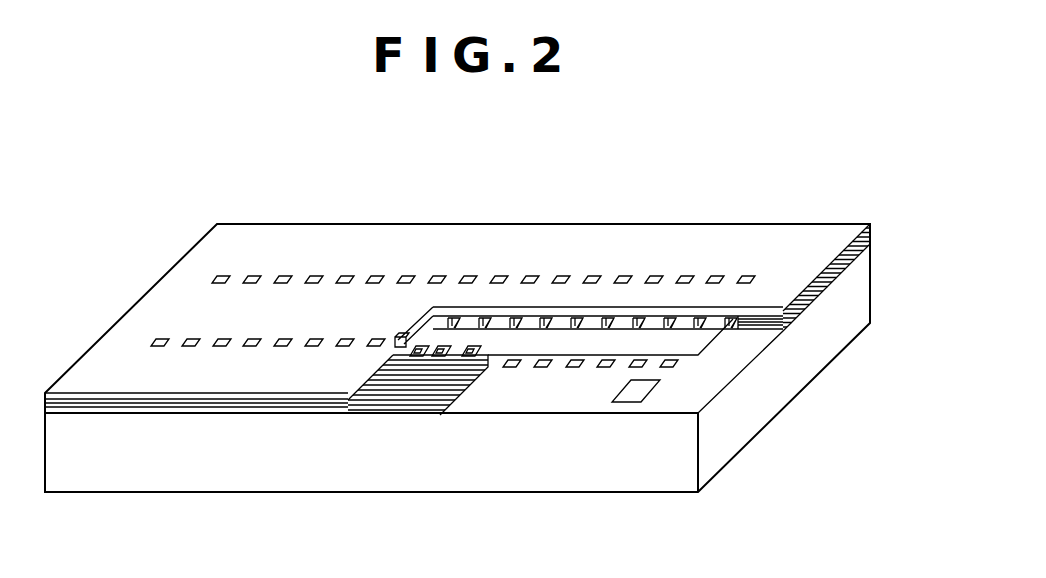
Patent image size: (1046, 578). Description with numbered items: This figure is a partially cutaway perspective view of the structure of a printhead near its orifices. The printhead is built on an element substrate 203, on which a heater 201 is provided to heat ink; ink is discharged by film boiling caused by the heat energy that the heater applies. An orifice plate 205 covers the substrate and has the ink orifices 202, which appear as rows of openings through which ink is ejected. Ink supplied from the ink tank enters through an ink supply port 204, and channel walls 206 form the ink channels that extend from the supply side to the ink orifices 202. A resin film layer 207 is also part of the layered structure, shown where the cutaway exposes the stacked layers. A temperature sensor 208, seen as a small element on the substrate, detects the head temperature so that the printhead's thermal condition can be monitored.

The heater 201 is at (665, 363).
The ink orifices 202 is at (650, 279).
The element substrate 203 is at (575, 463).
The ink supply port 204 is at (697, 340).
The orifice plate 205 is at (811, 234).
The channel walls 206 is at (497, 313).
The resin film layer 207 is at (392, 408).
The temperature sensor 208 is at (642, 390).